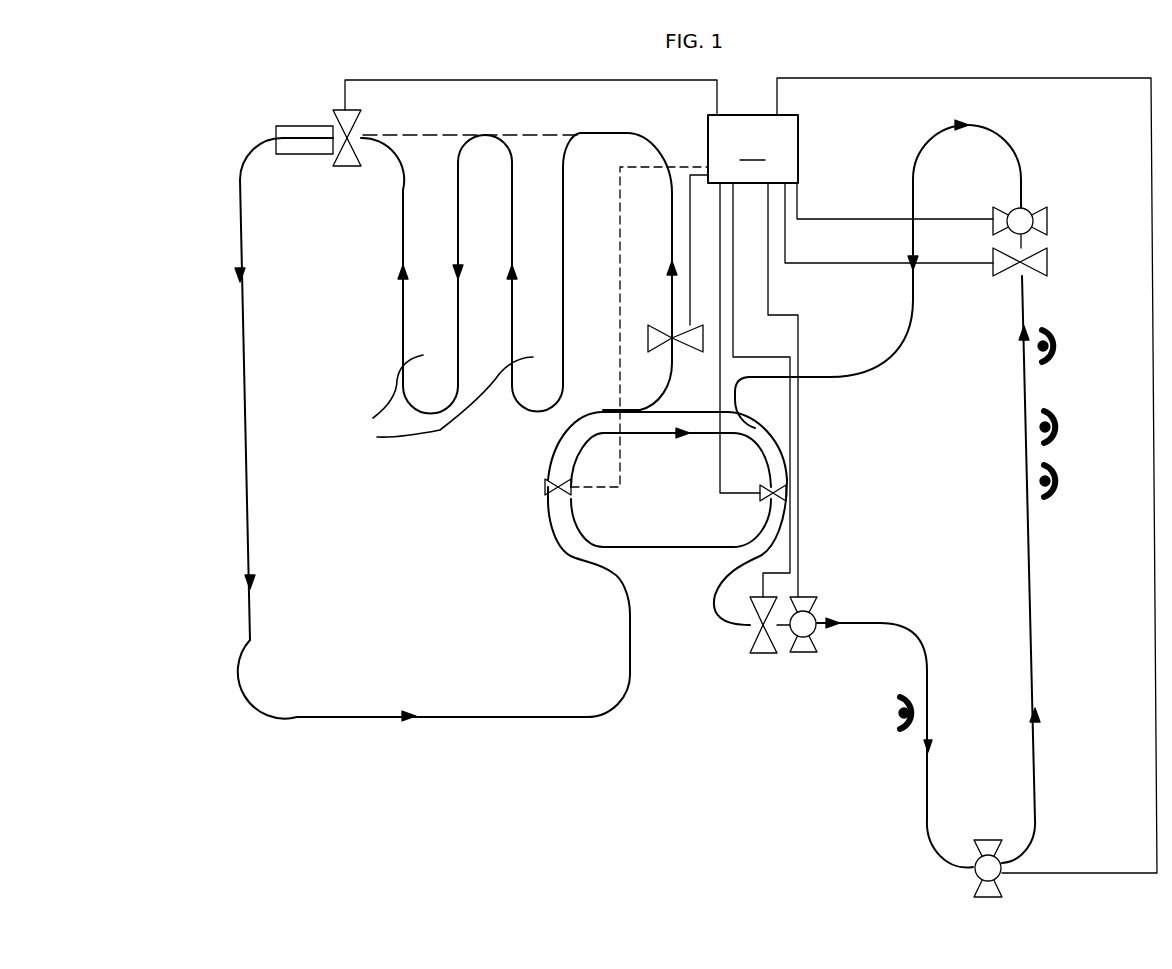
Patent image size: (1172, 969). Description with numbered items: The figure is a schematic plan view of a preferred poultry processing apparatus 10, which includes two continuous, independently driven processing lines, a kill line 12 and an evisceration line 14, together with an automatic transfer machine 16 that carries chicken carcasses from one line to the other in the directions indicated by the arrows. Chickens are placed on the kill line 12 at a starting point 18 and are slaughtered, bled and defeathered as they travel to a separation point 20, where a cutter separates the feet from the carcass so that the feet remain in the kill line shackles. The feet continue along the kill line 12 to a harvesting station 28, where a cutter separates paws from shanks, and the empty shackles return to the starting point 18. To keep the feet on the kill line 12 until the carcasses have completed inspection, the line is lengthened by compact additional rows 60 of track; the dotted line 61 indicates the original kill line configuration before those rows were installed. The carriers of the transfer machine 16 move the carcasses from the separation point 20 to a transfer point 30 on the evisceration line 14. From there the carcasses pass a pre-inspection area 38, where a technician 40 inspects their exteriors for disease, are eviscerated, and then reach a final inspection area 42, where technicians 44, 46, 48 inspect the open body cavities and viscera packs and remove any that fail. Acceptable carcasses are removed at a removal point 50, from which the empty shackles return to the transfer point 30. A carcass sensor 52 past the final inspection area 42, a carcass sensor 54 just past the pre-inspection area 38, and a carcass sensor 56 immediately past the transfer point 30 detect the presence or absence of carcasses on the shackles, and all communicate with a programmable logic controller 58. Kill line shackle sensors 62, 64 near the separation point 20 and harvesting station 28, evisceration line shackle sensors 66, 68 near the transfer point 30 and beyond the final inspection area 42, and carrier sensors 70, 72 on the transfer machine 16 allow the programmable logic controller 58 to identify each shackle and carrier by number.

The apparatus 10 is at (222, 160).
The kill line 12 is at (238, 408).
The evisceration line 14 is at (1027, 468).
The automatic transfer machine 16 is at (643, 545).
The starting point 18 is at (317, 718).
The separation point 20 is at (543, 495).
The harvesting station 28 is at (292, 126).
The transfer point 30 is at (787, 477).
The pre-inspection area 38 is at (930, 715).
The technician 40 is at (895, 718).
The final inspection area 42 is at (1025, 392).
The technician 44 is at (1060, 337).
The technician 46 is at (1065, 427).
The technician 48 is at (1065, 482).
The removal point 50 is at (967, 123).
The carcass sensor 52 is at (1047, 218).
The carcass sensor 54 is at (985, 840).
The carcass sensor 56 is at (817, 602).
The programmable logic controller 58 is at (932, 475).
The rows of track 60 is at (504, 291).
The dotted line 61 is at (430, 135).
The kill line shackle sensor 62 is at (698, 352).
The kill line shackle sensor 64 is at (358, 112).
The evisceration line shackle sensor 66 is at (763, 652).
The evisceration line shackle sensor 68 is at (1047, 265).
The carrier sensor 70 is at (570, 494).
The carrier sensor 72 is at (760, 498).